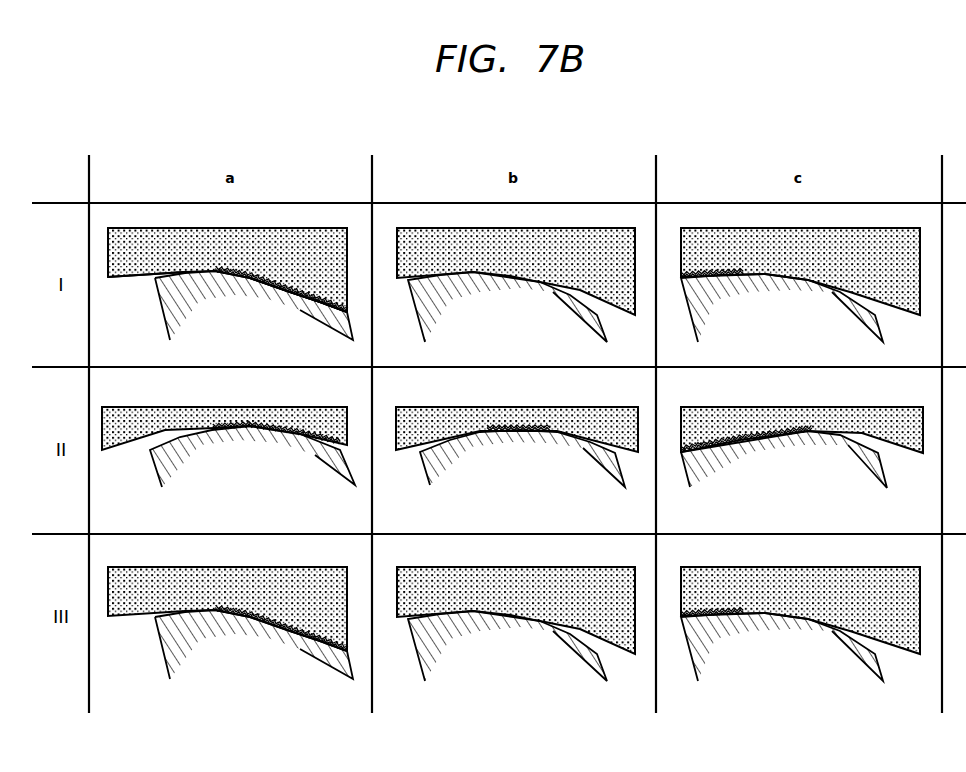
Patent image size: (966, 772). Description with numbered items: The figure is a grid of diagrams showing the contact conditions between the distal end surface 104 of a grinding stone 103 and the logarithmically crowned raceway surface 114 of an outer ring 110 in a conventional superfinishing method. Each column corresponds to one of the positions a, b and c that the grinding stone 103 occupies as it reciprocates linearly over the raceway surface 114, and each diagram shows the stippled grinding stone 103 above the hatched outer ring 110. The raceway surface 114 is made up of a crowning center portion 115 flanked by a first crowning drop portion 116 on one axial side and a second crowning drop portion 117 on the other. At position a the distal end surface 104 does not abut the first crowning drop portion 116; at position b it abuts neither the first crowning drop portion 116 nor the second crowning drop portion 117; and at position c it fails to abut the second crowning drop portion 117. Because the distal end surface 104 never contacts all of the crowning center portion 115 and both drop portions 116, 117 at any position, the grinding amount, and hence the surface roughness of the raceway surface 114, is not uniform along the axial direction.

The grinding stone 103 is at (130, 243).
The distal end surface 104 is at (267, 280).
The outer ring 110 is at (197, 310).
The raceway surface 114 is at (327, 293).
The crowning center portion 115 is at (243, 273).
The first crowning drop portion 116 is at (177, 273).
The second crowning drop portion 117 is at (307, 290).